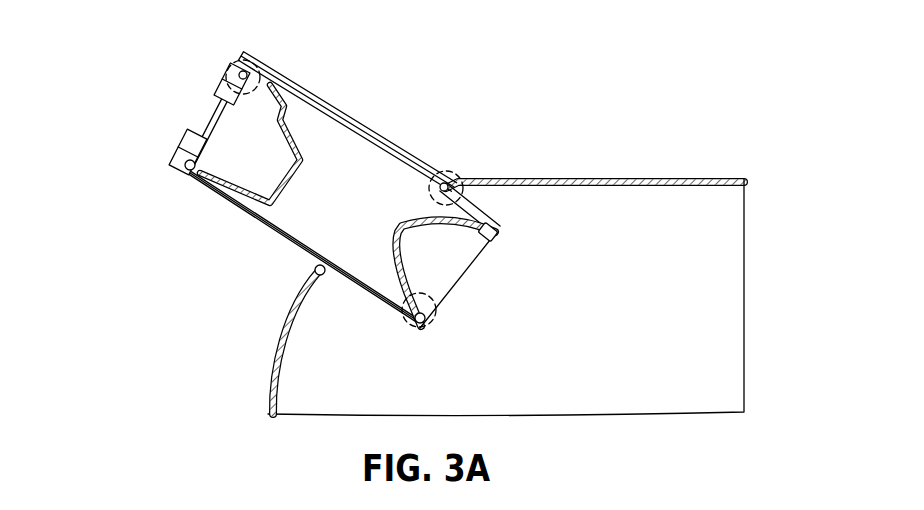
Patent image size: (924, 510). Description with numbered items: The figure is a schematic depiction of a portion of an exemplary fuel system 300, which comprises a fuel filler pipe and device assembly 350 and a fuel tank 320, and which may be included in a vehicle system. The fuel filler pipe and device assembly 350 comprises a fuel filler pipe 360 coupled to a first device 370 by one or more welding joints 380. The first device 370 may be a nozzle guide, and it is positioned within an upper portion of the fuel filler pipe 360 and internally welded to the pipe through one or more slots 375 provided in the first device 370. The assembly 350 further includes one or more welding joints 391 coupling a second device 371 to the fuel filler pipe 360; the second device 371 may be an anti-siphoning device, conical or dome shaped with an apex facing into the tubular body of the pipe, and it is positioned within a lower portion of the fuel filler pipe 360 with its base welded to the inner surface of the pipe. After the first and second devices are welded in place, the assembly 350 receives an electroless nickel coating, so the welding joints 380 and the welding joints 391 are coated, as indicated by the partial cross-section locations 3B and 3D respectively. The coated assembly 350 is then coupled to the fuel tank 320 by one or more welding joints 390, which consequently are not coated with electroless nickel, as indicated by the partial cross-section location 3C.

The fuel system 300 is at (824, 94).
The fuel tank 320 is at (634, 178).
The fuel filler pipe and device assembly 350 is at (160, 91).
The fuel filler pipe 360 is at (398, 150).
The first device 370 is at (298, 132).
The second device 371 is at (402, 253).
The slots 375 is at (224, 83).
The welding joints 380 is at (186, 172).
The welding joints 390 is at (313, 268).
The welding joints 391 is at (497, 238).
The partial cross-section view 3B is at (252, 57).
The partial cross-section view 3C is at (452, 176).
The partial cross-section view 3D is at (404, 327).